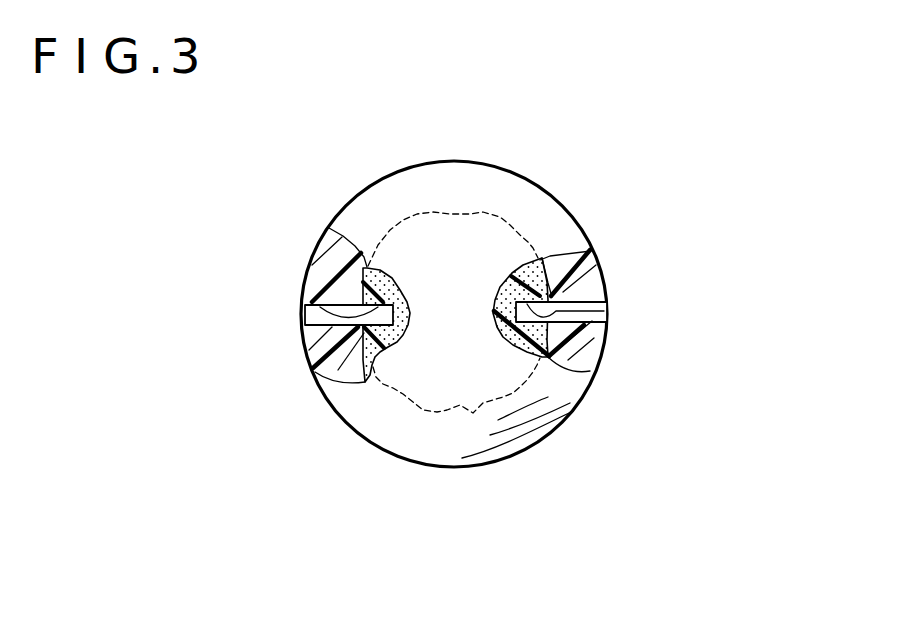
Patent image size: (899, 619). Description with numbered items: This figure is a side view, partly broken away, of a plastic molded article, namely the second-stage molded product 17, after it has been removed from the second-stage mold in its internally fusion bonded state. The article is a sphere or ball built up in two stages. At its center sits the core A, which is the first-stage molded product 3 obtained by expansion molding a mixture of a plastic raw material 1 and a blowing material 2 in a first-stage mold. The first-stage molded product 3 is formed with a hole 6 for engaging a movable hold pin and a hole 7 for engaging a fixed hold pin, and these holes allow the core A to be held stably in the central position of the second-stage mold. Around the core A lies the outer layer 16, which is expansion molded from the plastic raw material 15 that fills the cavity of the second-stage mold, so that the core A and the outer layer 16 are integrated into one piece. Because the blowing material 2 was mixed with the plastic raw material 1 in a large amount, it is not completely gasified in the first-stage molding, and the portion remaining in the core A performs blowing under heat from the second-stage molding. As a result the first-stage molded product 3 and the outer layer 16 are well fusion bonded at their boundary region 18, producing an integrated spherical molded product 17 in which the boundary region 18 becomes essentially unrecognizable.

The second-stage molded product 17 is at (340, 194).
The hole 6 is at (312, 300).
The outer layer 16 is at (327, 341).
The plastic raw material 15 is at (348, 310).
The core A is at (455, 320).
The first-stage molded product 3 is at (422, 369).
The hole 7 is at (570, 302).
The plastic raw material 1 is at (565, 340).
The blowing material 2 is at (547, 352).
The boundary region 18 is at (437, 405).